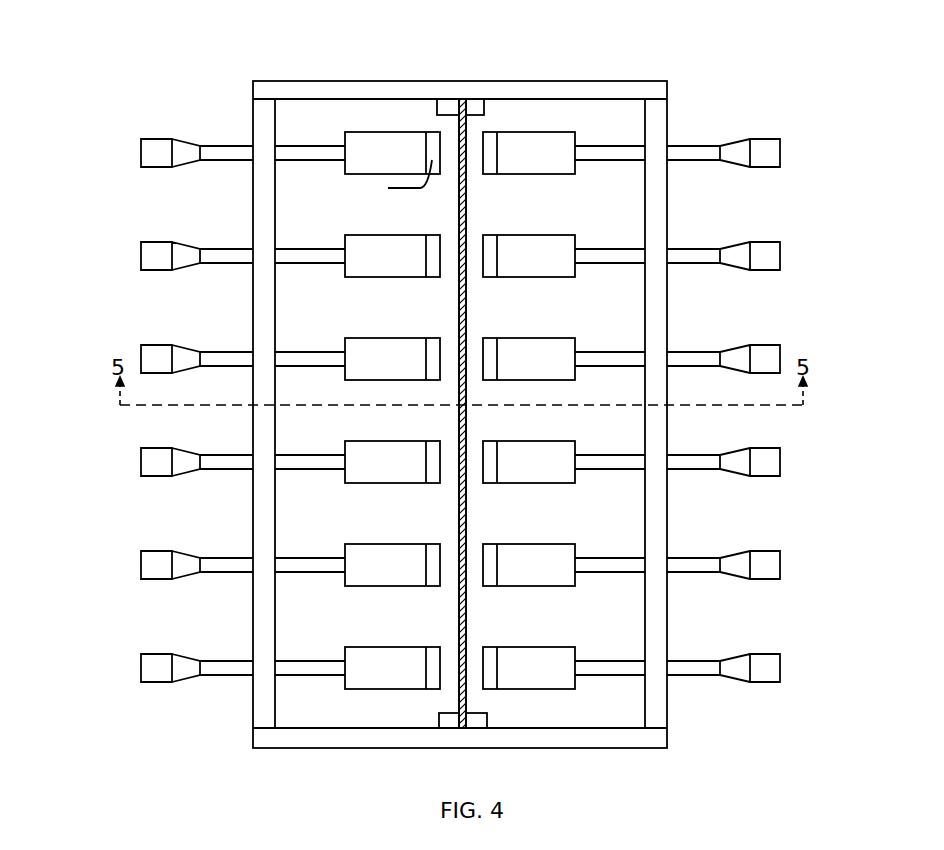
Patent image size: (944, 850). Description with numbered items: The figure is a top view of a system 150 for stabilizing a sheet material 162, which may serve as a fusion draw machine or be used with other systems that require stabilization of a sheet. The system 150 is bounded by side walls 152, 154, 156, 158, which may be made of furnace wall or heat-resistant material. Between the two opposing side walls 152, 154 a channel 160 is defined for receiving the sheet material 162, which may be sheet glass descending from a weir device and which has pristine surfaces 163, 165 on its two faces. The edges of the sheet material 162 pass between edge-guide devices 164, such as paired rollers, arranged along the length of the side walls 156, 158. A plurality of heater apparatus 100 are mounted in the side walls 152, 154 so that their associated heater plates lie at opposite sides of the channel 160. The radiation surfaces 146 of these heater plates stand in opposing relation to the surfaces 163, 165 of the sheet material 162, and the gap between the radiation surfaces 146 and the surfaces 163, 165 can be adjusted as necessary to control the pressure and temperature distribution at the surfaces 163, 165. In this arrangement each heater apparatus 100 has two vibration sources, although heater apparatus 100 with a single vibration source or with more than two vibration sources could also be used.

The heater apparatus 100 is at (140, 143).
The radiation surface 146 is at (442, 133).
The system 150 is at (279, 76).
The side wall 152 is at (257, 123).
The side wall 154 is at (660, 118).
The side wall 156 is at (342, 82).
The side wall 158 is at (563, 735).
The channel 160 is at (620, 108).
The sheet material 162 is at (462, 99).
The pristine surface 163 is at (458, 230).
The edge-guide device 164 is at (443, 103).
The pristine surface 165 is at (466, 208).